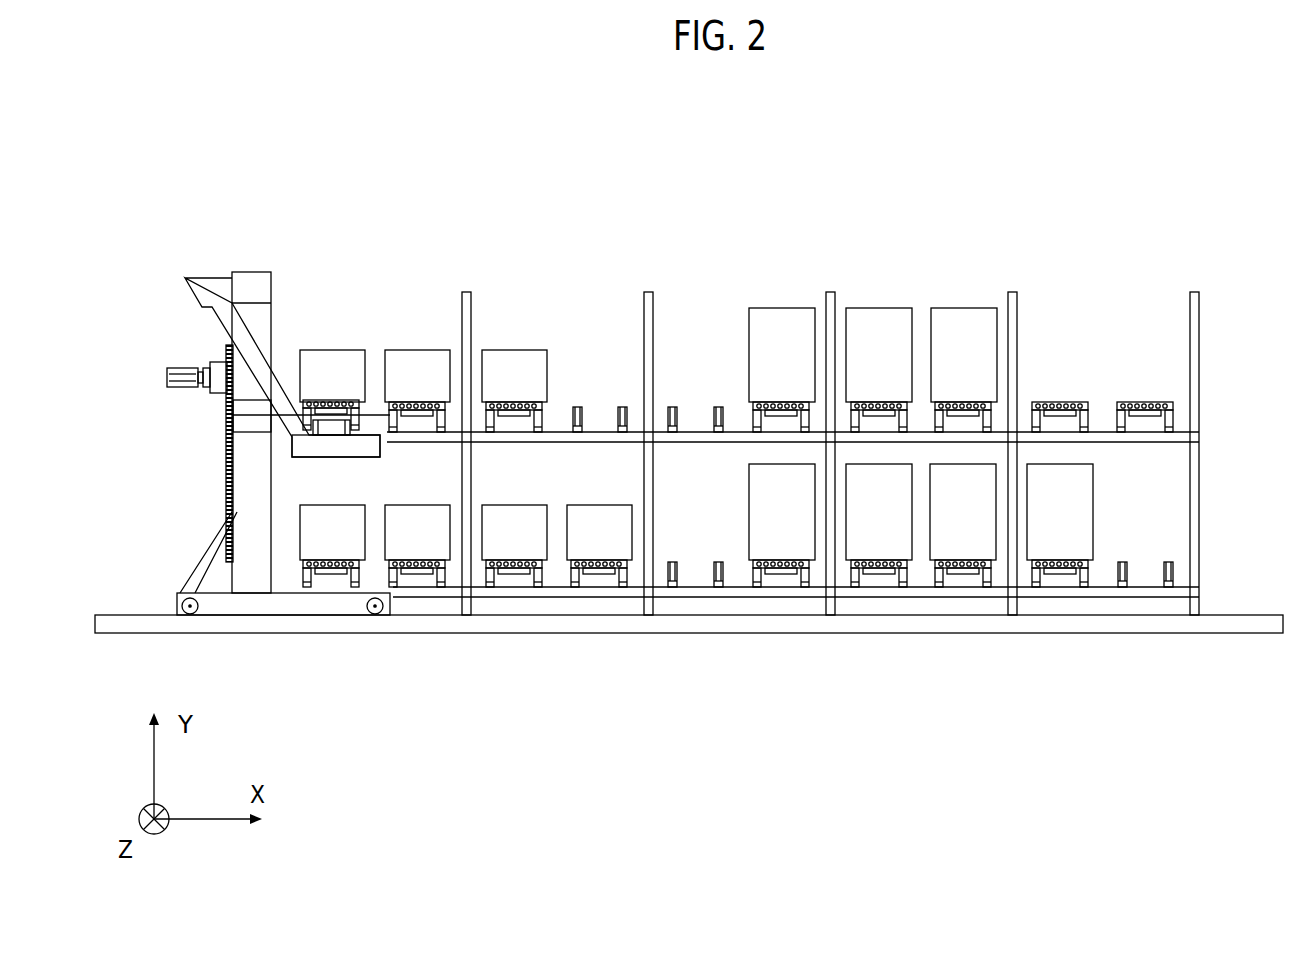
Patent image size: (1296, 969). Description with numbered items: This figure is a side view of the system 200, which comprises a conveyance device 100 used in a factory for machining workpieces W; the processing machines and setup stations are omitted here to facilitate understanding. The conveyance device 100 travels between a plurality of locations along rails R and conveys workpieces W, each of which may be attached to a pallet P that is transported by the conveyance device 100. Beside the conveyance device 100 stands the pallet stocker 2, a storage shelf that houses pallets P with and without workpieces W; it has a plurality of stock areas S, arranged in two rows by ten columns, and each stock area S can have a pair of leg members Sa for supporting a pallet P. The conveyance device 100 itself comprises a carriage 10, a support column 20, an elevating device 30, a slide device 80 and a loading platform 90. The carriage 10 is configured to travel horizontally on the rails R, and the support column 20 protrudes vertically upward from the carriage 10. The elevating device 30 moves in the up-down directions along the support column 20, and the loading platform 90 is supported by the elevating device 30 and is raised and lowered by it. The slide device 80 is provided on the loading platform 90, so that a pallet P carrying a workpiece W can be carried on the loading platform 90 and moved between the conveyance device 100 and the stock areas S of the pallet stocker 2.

The system 200 is at (124, 155).
The conveyance device 100 is at (264, 441).
The elevating device 30 is at (230, 322).
The support column 20 is at (252, 515).
The slide device 80 is at (310, 414).
The loading platform 90 is at (357, 450).
The carriage 10 is at (317, 615).
The pallet stocker 2 is at (821, 450).
The rail R is at (760, 632).
The stock area S is at (1147, 592).
The leg member Sa is at (1122, 563).
The workpiece W is at (415, 365).
The pallet P is at (298, 419).